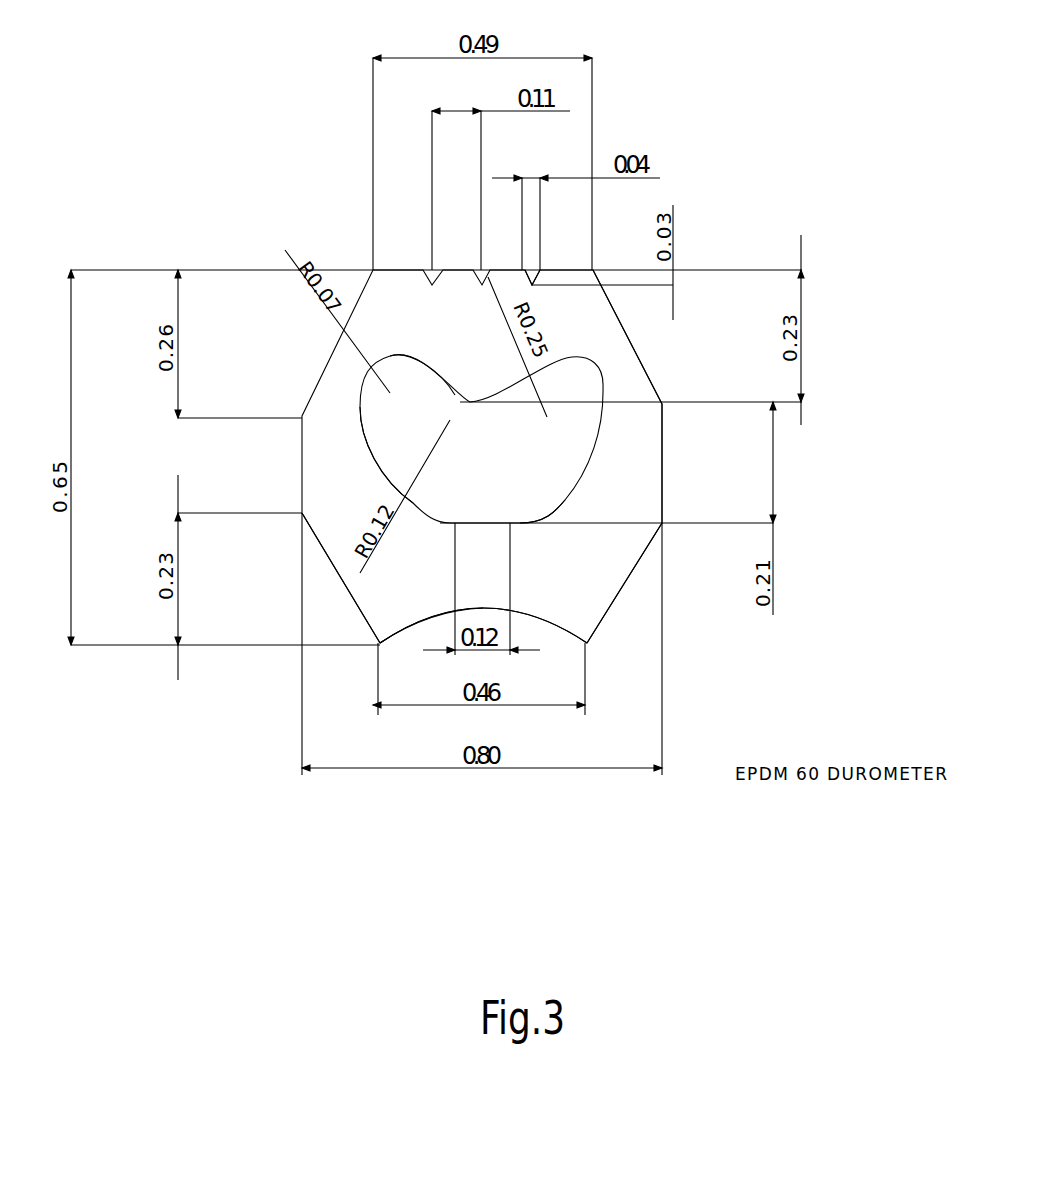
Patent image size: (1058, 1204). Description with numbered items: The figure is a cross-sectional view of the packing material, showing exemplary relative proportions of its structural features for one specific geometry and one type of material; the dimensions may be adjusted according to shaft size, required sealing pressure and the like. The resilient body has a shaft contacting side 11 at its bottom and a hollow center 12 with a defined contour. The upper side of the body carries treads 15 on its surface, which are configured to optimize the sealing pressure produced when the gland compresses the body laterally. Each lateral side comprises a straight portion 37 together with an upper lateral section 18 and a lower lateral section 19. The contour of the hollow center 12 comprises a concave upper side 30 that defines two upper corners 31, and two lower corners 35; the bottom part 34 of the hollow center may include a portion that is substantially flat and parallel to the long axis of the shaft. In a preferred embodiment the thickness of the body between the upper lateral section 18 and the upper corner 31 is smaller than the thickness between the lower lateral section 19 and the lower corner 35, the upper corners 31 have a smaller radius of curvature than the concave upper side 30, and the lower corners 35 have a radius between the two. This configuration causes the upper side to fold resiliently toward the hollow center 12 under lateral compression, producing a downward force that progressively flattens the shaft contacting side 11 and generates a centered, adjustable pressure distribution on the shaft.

The concave upper side 30 is at (465, 400).
The upper corners 31 is at (360, 382).
The treads 15 is at (533, 283).
The upper lateral section 18 is at (635, 358).
The straight portion 37 is at (662, 452).
The lower corners 35 is at (557, 508).
The lower lateral section 19 is at (628, 567).
The bottom part 34 is at (495, 530).
The hollow center 12 is at (468, 482).
The shaft contacting side 11 is at (413, 630).